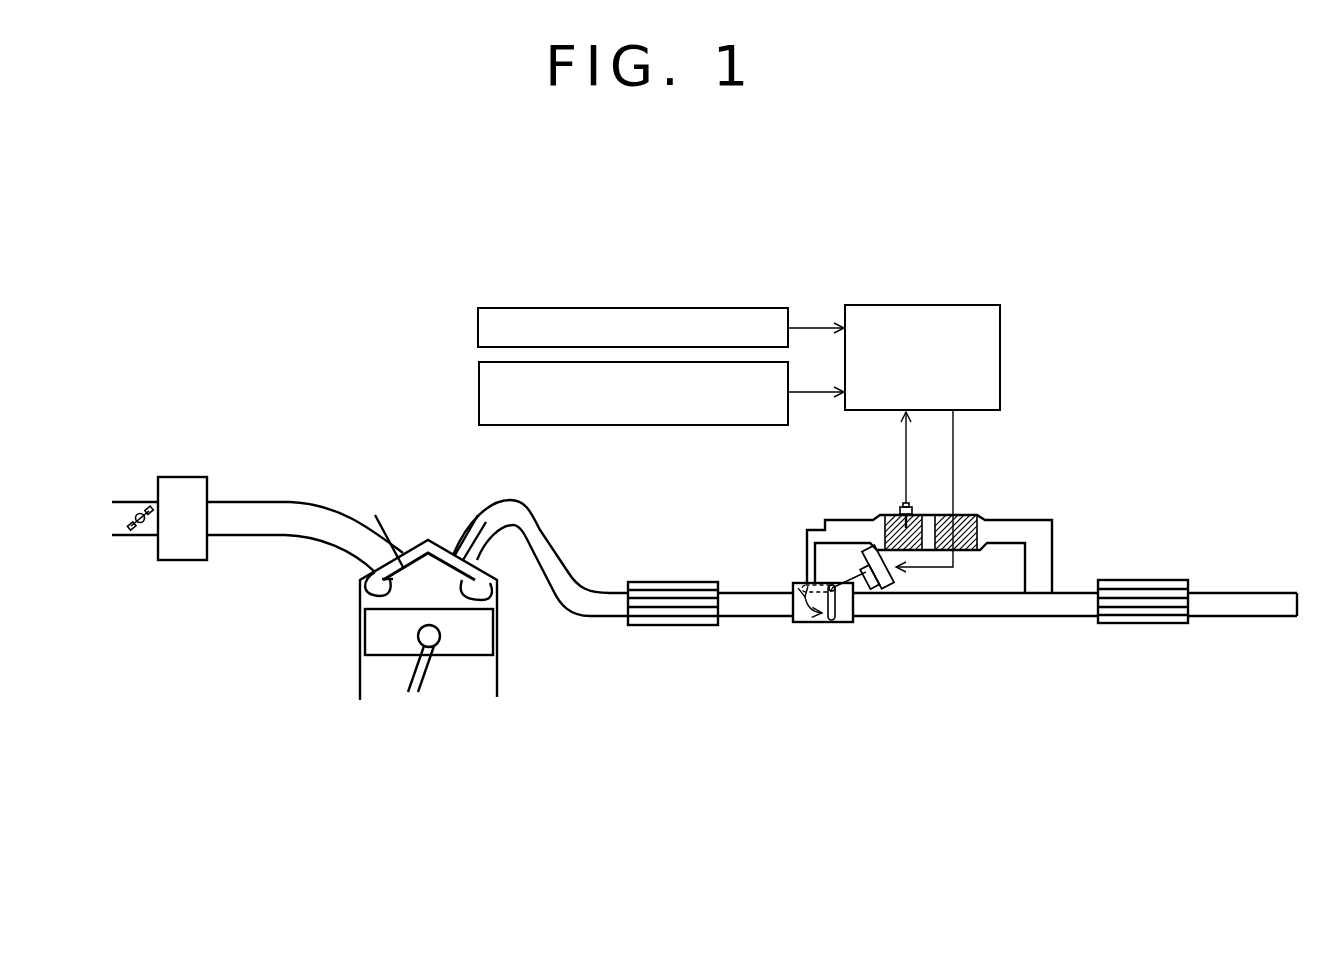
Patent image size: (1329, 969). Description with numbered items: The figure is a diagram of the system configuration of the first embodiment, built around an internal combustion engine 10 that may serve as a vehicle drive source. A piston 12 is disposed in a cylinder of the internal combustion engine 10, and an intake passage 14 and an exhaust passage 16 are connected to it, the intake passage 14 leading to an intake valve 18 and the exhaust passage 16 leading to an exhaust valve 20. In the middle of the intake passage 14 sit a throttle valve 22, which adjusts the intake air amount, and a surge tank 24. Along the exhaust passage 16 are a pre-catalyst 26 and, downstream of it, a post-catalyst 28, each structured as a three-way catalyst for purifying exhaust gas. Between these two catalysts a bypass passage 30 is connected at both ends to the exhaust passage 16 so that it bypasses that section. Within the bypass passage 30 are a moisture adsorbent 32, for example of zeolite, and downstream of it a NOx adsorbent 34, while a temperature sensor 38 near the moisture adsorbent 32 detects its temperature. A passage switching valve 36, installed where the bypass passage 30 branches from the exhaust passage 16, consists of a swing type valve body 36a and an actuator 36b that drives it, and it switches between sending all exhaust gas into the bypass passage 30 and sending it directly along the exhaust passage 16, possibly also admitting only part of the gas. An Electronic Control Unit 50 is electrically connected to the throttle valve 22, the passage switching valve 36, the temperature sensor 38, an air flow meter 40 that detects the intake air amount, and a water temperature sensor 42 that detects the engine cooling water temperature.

The internal combustion engine 10 is at (357, 683).
The piston 12 is at (480, 640).
The intake passage 14 is at (287, 502).
The exhaust passage 16 is at (567, 553).
The intake valve 18 is at (360, 586).
The exhaust valve 20 is at (497, 598).
The throttle valve 22 is at (137, 513).
The surge tank 24 is at (181, 477).
The pre-catalyst 26 is at (672, 582).
The post-catalyst 28 is at (1147, 580).
The bypass passage 30 is at (852, 518).
The moisture adsorbent 32 is at (893, 515).
The NOx adsorbent 34 is at (967, 515).
The passage switching valve 36 is at (886, 561).
The valve body 36a is at (850, 623).
The actuator 36b is at (880, 587).
The temperature sensor 38 is at (910, 507).
The air flow meter 40 is at (478, 330).
The water temperature sensor 42 is at (479, 392).
The Electronic Control Unit (ECU) 50 is at (898, 305).